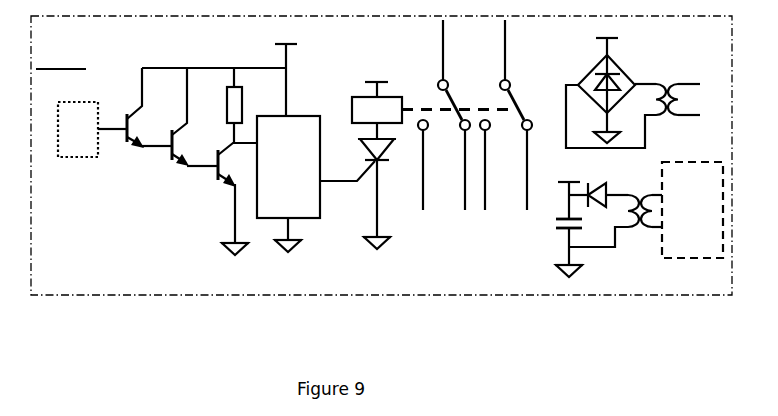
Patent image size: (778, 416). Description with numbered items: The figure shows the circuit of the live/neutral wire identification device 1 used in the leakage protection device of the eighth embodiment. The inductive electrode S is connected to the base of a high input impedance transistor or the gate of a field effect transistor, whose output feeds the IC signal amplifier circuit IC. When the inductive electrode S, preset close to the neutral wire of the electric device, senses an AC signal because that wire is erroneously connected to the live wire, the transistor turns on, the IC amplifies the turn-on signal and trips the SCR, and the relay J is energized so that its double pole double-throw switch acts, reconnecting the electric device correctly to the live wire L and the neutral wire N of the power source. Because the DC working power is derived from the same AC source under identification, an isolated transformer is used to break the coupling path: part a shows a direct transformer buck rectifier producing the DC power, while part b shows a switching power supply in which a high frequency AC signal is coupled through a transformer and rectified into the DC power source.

The live/neutral wire identification device 1 is at (288, 287).
The inductive electrode S is at (86, 129).
The IC signal amplifier circuit IC is at (288, 167).
The relay J is at (377, 110).
The live wire of the power source L is at (690, 74).
The neutral wire of the power source N is at (691, 127).
The direct transformer buck rectifier DC power solution a is at (635, 95).
The switching power supply DC power solution b is at (638, 219).